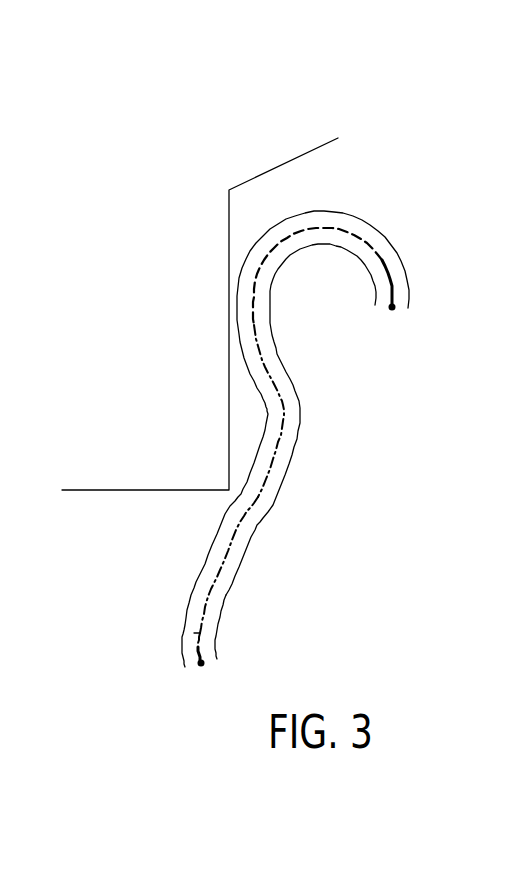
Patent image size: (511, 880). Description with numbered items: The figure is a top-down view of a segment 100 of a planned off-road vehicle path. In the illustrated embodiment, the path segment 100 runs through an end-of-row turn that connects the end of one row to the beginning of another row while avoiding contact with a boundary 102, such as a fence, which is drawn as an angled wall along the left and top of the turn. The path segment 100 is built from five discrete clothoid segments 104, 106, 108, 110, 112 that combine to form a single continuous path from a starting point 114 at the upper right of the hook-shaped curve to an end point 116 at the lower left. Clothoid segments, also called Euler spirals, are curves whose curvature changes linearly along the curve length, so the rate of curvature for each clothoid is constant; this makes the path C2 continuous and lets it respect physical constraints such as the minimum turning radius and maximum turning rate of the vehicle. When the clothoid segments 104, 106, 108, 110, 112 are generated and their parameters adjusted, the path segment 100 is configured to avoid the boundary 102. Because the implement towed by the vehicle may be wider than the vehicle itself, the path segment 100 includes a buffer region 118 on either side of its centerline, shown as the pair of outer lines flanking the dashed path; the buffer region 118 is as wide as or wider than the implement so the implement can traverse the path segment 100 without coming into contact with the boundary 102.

The path segment 100 is at (319, 450).
The boundary 102 is at (282, 165).
The clothoid segment 104 is at (391, 283).
The clothoid segment 106 is at (324, 226).
The clothoid segment 108 is at (268, 351).
The clothoid segment 110 is at (246, 515).
The clothoid segment 112 is at (196, 633).
The starting point 114 is at (394, 308).
The end point 116 is at (200, 666).
The buffer region 118 is at (215, 616).